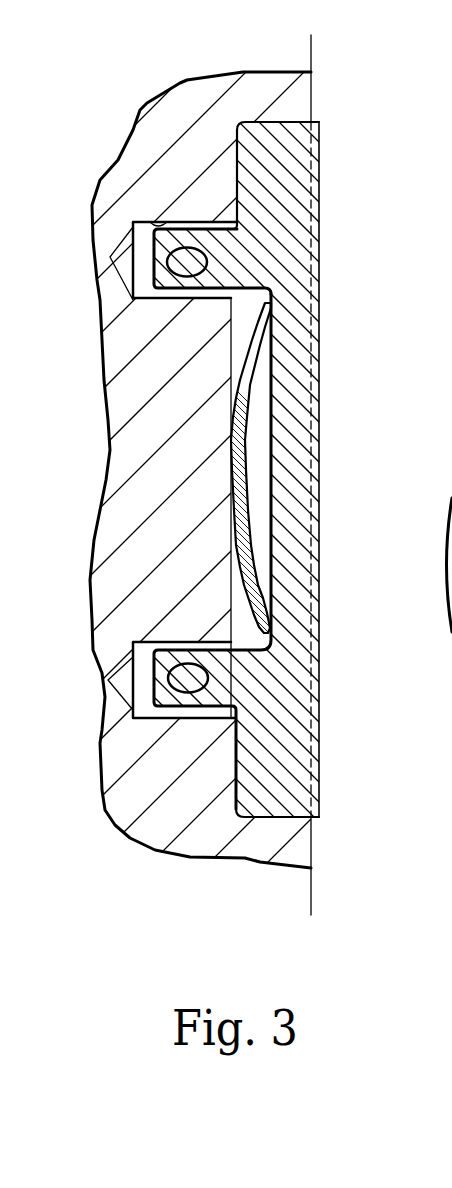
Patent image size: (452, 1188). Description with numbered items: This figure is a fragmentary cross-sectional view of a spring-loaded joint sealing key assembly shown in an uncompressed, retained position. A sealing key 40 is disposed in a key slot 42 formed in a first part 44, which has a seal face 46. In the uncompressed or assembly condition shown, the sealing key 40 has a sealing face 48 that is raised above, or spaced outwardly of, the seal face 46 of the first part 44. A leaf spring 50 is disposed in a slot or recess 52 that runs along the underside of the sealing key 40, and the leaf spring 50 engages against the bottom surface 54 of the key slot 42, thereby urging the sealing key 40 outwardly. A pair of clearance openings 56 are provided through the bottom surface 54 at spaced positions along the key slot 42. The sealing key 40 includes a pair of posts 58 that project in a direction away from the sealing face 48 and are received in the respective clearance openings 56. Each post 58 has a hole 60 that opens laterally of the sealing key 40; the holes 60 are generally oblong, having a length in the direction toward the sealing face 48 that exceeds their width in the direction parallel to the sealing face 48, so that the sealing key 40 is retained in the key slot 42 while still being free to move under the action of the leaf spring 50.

The sealing key 40 is at (287, 193).
The key slot 42 is at (233, 145).
The first part 44 is at (247, 98).
The seal face 46 is at (315, 837).
The sealing face 48 is at (318, 627).
The leaf spring 50 is at (247, 430).
The recess 52 is at (271, 380).
The bottom surface 54 is at (233, 344).
The clearance openings 56 is at (148, 222).
The posts 58 is at (175, 290).
The hole 60 is at (180, 260).